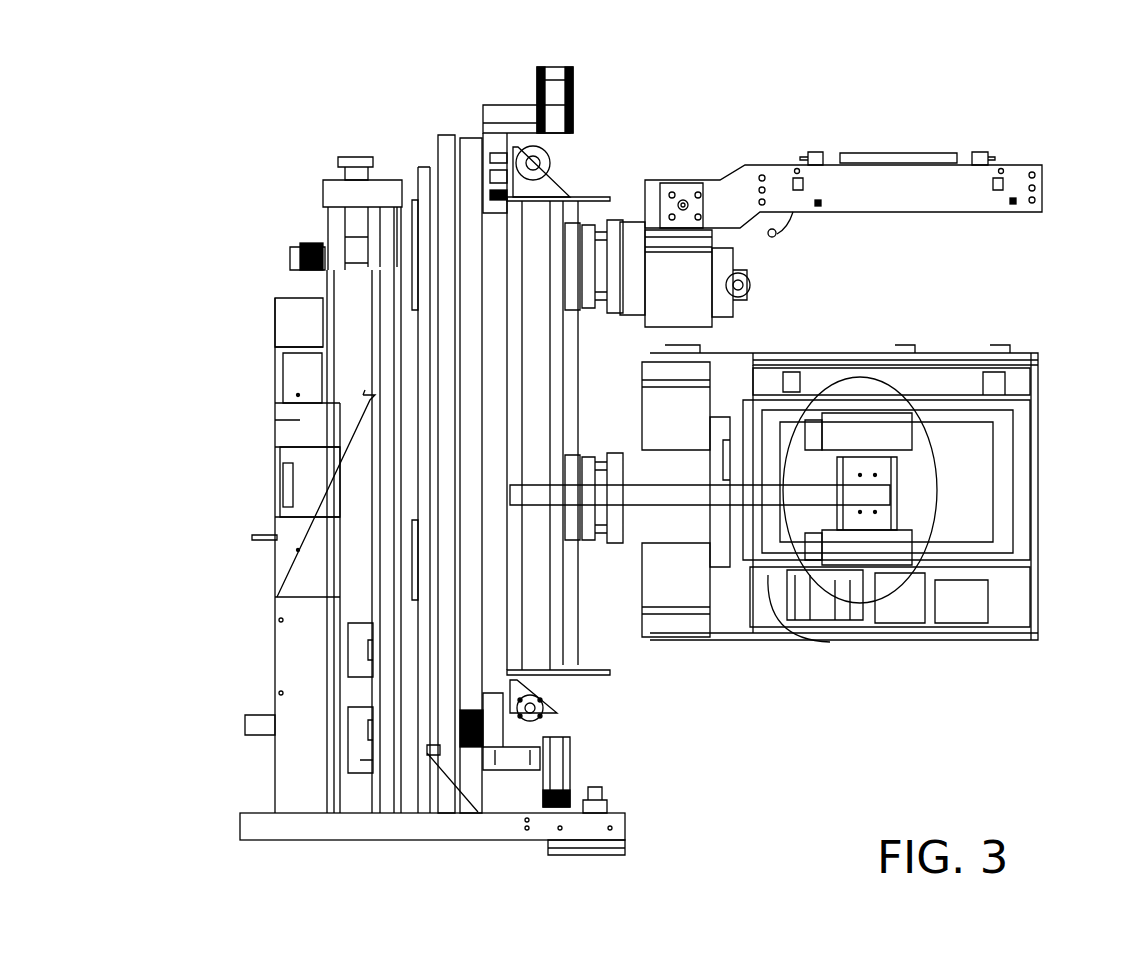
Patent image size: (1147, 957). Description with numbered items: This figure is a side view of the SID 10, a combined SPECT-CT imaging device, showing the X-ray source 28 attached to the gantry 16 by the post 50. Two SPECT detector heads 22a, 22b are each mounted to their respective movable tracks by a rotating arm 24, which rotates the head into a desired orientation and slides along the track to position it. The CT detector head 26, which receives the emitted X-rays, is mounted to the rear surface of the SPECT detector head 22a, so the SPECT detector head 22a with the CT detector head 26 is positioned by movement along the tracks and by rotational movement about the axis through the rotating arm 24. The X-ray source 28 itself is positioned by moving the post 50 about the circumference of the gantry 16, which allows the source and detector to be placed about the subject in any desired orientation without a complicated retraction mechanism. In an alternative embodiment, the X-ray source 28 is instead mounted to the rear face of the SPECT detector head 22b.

The SID 10 is at (226, 110).
The gantry 16 is at (476, 158).
The rotating arm 24 is at (593, 303).
The SPECT detector head 22a is at (1030, 352).
The SPECT detector head 22b is at (1040, 165).
The CT detector head 26 is at (987, 443).
The X-ray source 28 is at (938, 482).
The post 50 is at (700, 495).